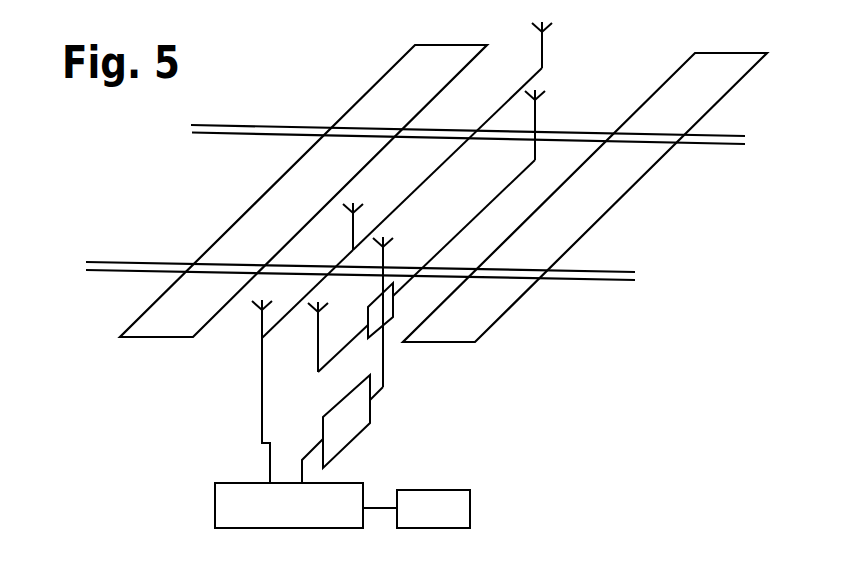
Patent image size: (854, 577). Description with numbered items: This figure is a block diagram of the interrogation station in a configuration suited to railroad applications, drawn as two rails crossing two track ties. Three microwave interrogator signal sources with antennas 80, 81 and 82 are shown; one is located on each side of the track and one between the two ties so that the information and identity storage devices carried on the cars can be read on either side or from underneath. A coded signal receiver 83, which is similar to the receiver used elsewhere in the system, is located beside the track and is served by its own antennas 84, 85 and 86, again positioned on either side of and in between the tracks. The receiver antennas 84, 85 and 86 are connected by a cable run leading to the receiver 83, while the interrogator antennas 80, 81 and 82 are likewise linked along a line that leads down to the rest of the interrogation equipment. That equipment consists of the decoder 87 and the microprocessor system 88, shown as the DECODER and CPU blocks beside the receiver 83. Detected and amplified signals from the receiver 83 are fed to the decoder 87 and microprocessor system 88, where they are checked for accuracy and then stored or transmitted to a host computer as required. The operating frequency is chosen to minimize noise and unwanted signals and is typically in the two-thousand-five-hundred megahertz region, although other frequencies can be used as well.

The interrogator signal source antenna 80 is at (255, 306).
The interrogator signal source antenna 81 is at (346, 208).
The interrogator signal source antenna 82 is at (532, 26).
The coded signal receiver 83 is at (398, 445).
The receiver antenna 84 is at (309, 307).
The receiver antenna 85 is at (393, 240).
The receiver antenna 86 is at (545, 97).
The decoder 87 is at (232, 483).
The microprocessor system 88 is at (448, 490).